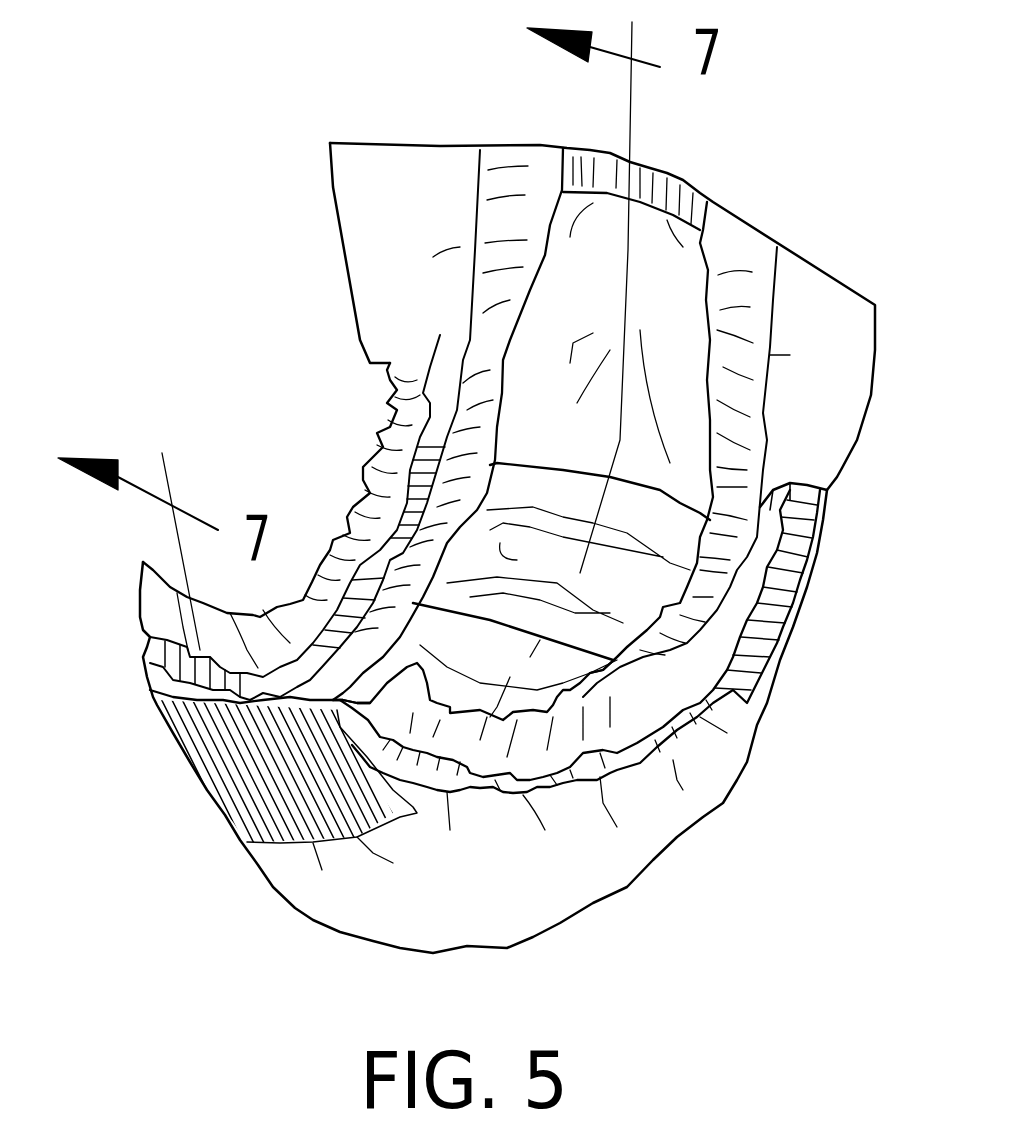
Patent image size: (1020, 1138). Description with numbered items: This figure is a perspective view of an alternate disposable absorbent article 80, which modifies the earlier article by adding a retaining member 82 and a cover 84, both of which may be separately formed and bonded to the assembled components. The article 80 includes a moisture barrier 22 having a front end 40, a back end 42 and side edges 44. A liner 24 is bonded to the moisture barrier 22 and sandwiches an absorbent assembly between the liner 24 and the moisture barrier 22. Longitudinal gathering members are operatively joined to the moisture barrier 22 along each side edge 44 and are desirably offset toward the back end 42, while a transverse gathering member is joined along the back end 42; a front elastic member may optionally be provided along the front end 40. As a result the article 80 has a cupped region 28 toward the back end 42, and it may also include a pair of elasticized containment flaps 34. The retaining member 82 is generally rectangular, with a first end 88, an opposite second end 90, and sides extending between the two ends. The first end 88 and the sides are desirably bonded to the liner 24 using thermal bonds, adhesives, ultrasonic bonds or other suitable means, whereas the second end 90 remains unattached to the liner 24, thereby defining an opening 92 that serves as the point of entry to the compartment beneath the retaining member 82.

The absorbent article 80 is at (219, 150).
The liner 24 is at (407, 223).
The moisture barrier 22 is at (582, 893).
The side edges 44 is at (340, 227).
The elasticized containment flaps 34 is at (472, 288).
The cupped region 28 is at (291, 478).
The back end 42 is at (157, 697).
The retaining member 82 is at (602, 304).
The cover 84 is at (495, 667).
The first end 88 is at (650, 163).
The front end 40 is at (826, 262).
The second end 90 is at (533, 472).
The opening 92 is at (568, 491).